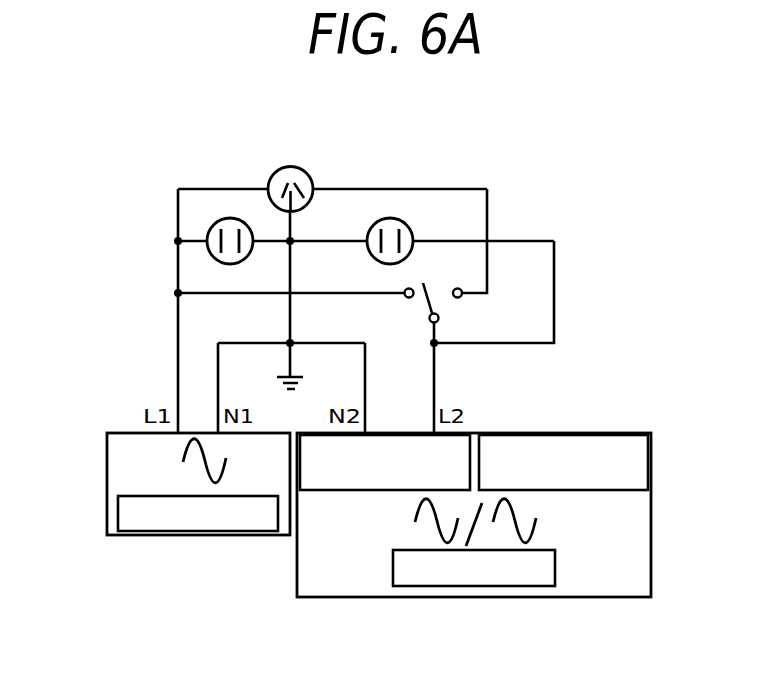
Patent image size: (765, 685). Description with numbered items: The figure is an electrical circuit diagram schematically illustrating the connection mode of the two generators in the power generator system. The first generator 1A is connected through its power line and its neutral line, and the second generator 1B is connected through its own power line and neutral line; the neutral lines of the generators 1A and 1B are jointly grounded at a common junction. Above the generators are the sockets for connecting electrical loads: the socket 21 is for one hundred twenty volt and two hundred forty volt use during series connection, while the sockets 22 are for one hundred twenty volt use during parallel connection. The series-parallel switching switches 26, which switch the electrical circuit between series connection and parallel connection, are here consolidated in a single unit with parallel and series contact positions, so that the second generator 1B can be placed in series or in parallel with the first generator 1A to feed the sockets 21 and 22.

The socket 21 is at (310, 178).
The sockets 22 is at (232, 219).
The series-parallel switching switches 26 is at (433, 299).
The first generator 1A is at (106, 465).
The second generator 1B is at (651, 452).